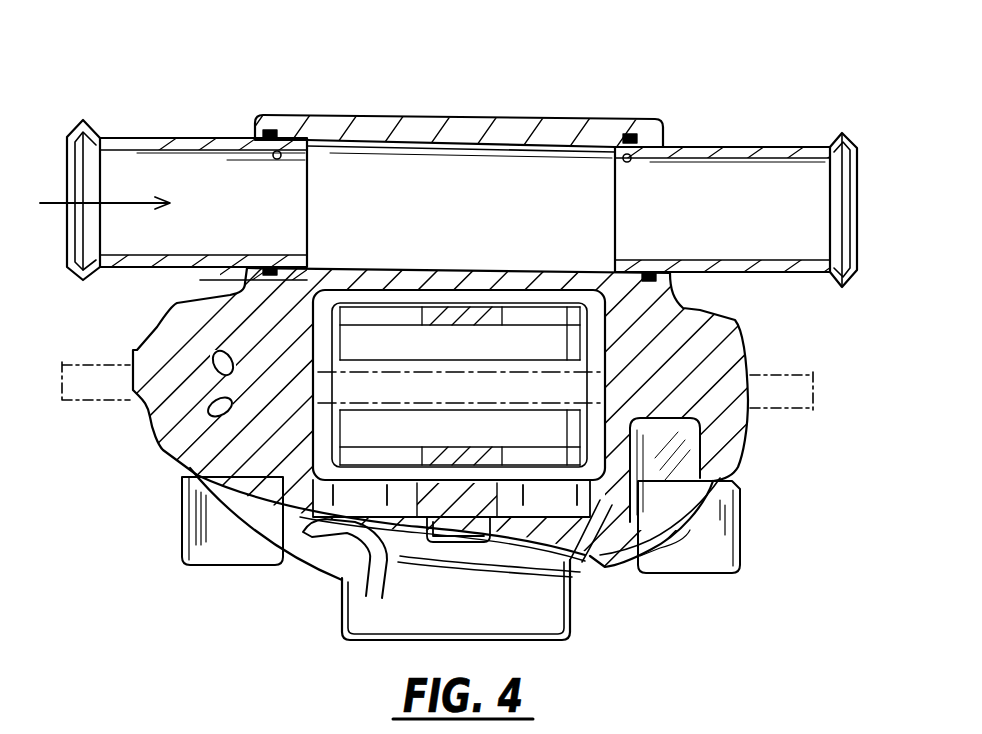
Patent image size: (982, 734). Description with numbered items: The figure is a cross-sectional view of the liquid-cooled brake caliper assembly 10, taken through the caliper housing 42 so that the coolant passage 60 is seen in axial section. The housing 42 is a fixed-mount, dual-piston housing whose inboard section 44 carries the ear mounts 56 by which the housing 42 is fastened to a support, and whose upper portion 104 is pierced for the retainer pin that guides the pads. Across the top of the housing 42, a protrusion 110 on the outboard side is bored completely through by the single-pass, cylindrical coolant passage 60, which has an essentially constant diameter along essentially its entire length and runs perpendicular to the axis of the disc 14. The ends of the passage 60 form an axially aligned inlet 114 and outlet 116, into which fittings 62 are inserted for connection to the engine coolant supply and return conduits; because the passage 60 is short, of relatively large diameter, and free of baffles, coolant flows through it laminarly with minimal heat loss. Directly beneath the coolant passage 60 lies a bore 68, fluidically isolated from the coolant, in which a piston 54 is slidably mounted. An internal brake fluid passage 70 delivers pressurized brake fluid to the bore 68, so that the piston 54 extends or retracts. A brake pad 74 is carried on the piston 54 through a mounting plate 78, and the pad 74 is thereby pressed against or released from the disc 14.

The assembly 10 is at (730, 70).
The disc 14 is at (95, 405).
The housing 42 is at (762, 355).
The inboard section 44 is at (560, 625).
The piston 54 is at (580, 290).
The ear mounts 56 is at (182, 545).
The coolant passage 60 is at (770, 160).
The fittings 62 is at (205, 97).
The bore 68 is at (605, 343).
The internal brake fluid passage 70 is at (218, 357).
The brake pad 74 is at (488, 354).
The mounting plate 78 is at (340, 312).
The upper portion 104 is at (553, 505).
The protrusion 110 is at (490, 90).
The inlet 114 is at (278, 152).
The outlet 116 is at (626, 154).